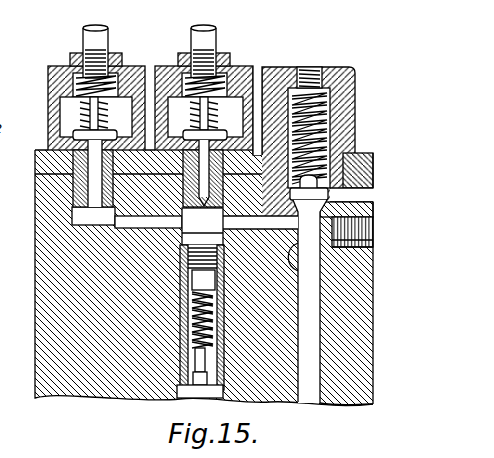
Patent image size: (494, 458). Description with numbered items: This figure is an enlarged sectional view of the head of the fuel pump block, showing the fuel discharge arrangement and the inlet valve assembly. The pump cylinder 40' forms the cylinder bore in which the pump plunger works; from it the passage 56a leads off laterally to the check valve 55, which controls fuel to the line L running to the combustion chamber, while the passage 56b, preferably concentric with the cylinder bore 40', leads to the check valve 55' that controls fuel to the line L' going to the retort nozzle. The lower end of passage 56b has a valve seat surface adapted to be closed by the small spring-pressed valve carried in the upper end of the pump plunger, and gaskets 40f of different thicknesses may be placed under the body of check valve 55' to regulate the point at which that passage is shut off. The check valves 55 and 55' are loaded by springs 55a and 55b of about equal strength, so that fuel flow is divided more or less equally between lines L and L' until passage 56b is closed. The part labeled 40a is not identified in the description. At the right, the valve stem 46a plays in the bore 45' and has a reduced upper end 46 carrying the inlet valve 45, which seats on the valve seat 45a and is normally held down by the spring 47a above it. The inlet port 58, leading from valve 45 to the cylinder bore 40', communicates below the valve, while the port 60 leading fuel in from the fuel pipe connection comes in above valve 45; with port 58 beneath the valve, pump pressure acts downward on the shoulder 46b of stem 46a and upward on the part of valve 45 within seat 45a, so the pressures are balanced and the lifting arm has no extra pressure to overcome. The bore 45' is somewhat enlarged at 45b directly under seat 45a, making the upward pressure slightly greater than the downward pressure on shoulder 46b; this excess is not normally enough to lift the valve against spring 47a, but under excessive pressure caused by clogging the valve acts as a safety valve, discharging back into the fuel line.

The fuel line L is at (102, 51).
The fuel line to retort nozzle L' is at (213, 51).
The check valve spring 55a is at (48, 83).
The check valve 55 is at (66, 141).
The check valve spring 55b is at (230, 103).
The check valve 55' is at (278, 100).
The gasket 40f is at (298, 78).
The spring 47a is at (326, 108).
The passage 56b is at (293, 182).
The inlet port 58 is at (373, 160).
The port 60 is at (356, 193).
The inlet valve 45 is at (363, 211).
The valve seat 45a is at (374, 223).
The enlarged bore portion 45b is at (374, 240).
The reduced upper end of valve stem 46 is at (318, 256).
The shoulder 46b is at (321, 280).
The valve stem 46a is at (306, 310).
The bore 45' is at (366, 385).
The pump cylinder 40' is at (186, 236).
The passage 56a is at (127, 222).
The body portion 40a is at (182, 236).